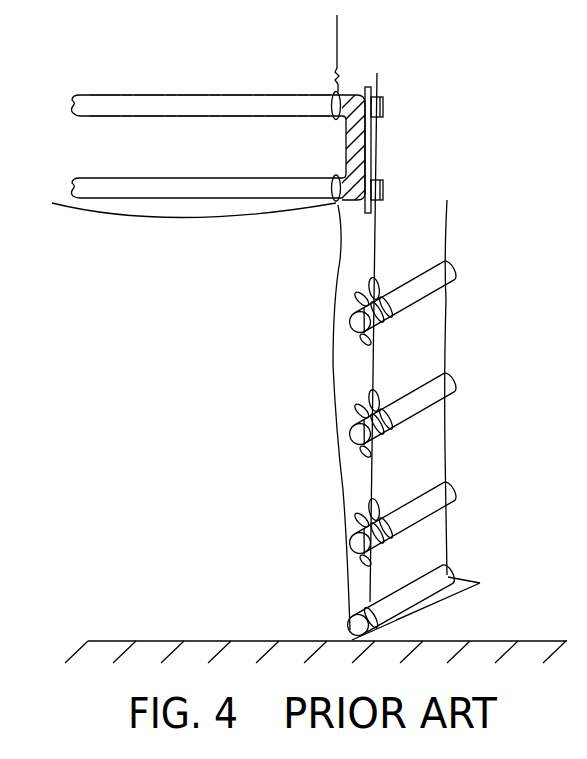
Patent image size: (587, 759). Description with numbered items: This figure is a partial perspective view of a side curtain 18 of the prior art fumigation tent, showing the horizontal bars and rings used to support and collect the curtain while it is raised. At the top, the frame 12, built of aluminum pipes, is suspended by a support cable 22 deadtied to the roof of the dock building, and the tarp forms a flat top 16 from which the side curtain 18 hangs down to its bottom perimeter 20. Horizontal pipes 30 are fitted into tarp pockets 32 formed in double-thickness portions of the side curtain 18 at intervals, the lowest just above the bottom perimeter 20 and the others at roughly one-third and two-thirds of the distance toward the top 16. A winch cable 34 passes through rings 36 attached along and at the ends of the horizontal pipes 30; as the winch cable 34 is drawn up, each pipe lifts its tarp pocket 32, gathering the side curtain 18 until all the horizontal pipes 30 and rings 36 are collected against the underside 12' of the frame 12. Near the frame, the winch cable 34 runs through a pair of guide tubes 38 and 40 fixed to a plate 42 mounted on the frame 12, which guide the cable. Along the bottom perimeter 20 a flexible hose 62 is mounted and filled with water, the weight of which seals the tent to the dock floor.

The frame 12 is at (207, 85).
The underside of the frame 12' is at (207, 200).
The top 16 is at (201, 222).
The side curtain 18 is at (342, 328).
The bottom perimeter 20 is at (479, 584).
The support cable 22 is at (341, 35).
The horizontal pipe 30 is at (441, 289).
The tarp pocket 32 is at (350, 421).
The winch cable 34 is at (372, 152).
The ring 36 is at (378, 286).
The guide tube 38 is at (385, 107).
The guide tube 40 is at (384, 190).
The plate 42 is at (364, 88).
The flexible hose 62 is at (408, 597).